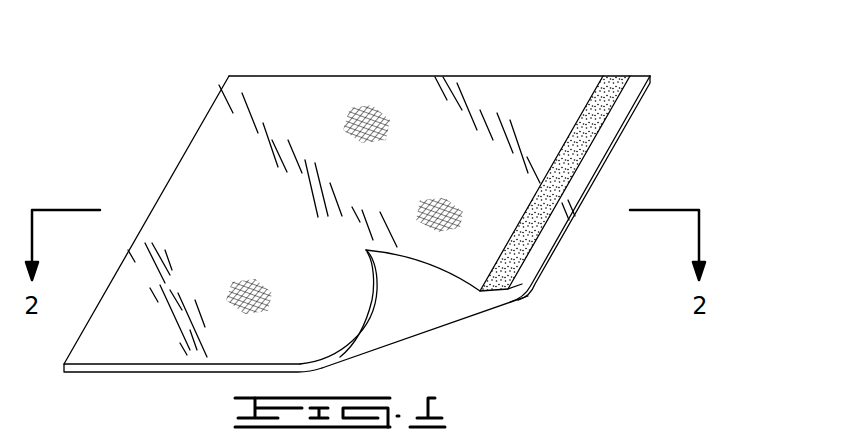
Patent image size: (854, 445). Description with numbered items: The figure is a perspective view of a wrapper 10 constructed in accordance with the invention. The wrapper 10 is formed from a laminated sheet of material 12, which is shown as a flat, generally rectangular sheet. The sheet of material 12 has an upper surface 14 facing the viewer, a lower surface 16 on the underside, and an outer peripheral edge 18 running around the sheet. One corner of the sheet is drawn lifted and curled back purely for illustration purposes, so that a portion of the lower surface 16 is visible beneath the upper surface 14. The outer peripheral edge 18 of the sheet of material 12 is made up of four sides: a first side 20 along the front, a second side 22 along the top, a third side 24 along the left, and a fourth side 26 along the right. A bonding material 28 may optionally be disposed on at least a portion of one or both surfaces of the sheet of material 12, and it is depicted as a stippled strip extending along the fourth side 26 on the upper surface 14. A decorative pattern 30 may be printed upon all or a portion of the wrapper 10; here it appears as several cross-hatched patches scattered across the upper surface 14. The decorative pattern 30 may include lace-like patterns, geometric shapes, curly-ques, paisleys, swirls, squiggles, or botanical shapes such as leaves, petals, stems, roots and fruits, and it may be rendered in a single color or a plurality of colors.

The wrapper 10 is at (648, 31).
The sheet of material 12 is at (206, 117).
The upper surface 14 is at (483, 97).
The lower surface 16 is at (420, 310).
The outer peripheral edge 18 is at (565, 226).
The first side 20 is at (167, 368).
The second side 22 is at (357, 76).
The third side 24 is at (163, 190).
The fourth side 26 is at (547, 262).
The bonding material 28 is at (594, 122).
The decorative pattern 30 is at (253, 288).